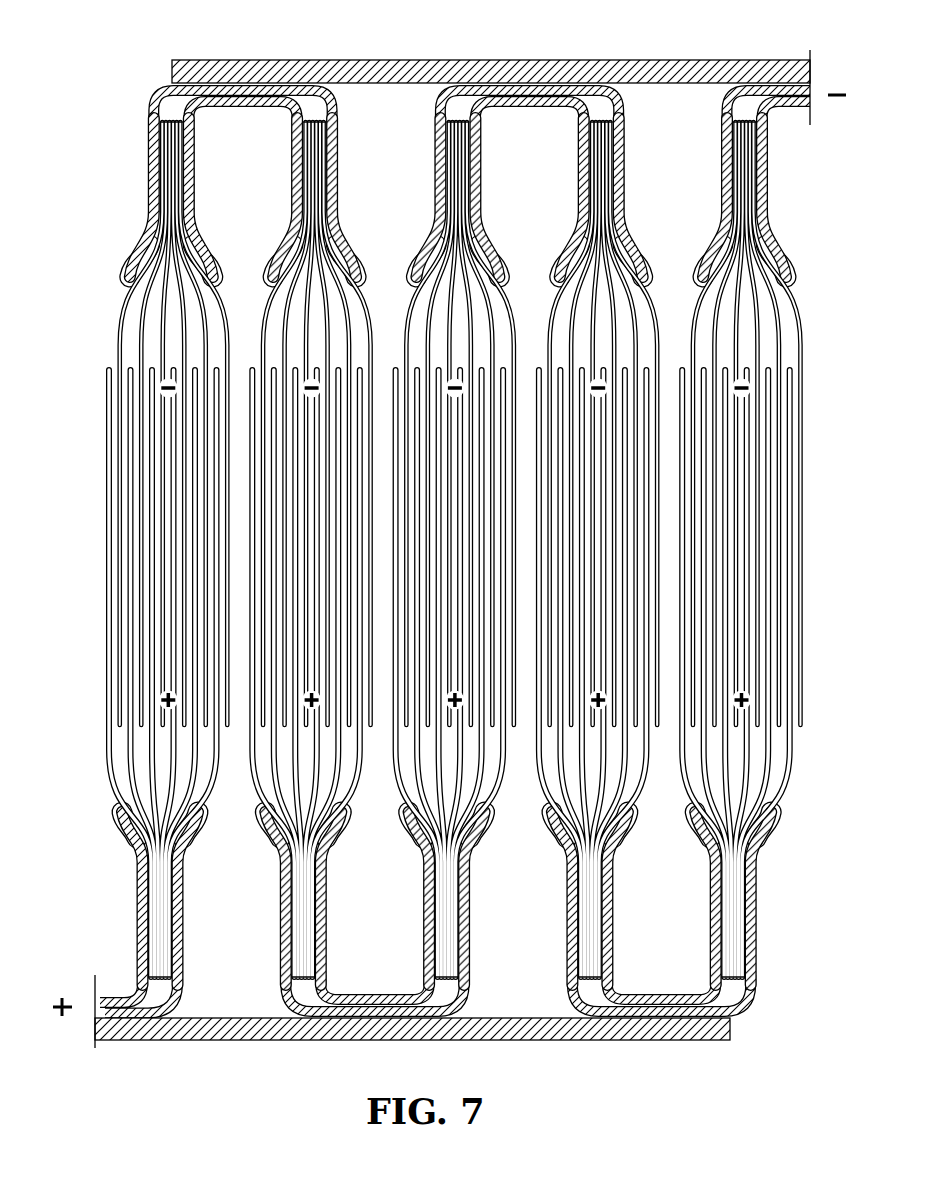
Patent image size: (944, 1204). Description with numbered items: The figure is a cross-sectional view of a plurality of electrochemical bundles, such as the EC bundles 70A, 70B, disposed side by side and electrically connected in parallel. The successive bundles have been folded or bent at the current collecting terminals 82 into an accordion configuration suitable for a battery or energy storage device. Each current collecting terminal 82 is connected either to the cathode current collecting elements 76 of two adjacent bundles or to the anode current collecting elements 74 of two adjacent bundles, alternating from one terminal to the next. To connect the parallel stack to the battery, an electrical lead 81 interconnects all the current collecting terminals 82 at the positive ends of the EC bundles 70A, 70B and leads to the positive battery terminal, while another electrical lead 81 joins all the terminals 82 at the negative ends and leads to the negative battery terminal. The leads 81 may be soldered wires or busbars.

The EC bundle 70A is at (136, 590).
The EC bundle 70B is at (780, 500).
The anode current collecting element 74 is at (157, 915).
The cathode current collecting element 76 is at (168, 193).
The electrical lead 81 is at (600, 60).
The current collecting terminal 82 is at (149, 101).